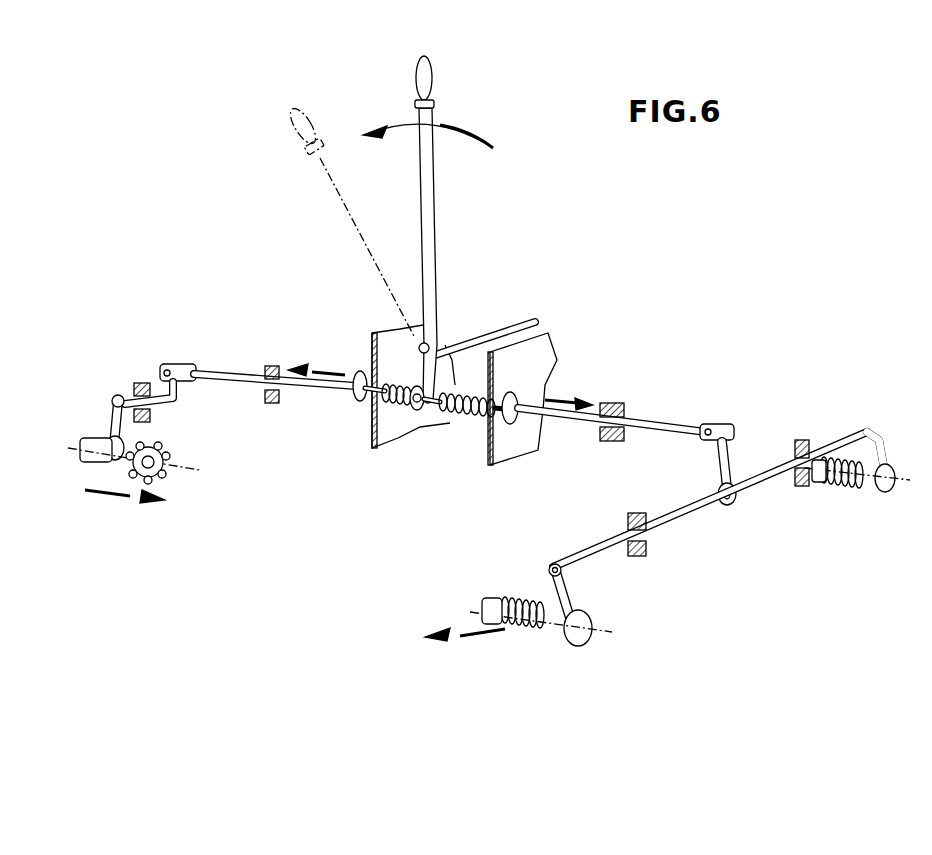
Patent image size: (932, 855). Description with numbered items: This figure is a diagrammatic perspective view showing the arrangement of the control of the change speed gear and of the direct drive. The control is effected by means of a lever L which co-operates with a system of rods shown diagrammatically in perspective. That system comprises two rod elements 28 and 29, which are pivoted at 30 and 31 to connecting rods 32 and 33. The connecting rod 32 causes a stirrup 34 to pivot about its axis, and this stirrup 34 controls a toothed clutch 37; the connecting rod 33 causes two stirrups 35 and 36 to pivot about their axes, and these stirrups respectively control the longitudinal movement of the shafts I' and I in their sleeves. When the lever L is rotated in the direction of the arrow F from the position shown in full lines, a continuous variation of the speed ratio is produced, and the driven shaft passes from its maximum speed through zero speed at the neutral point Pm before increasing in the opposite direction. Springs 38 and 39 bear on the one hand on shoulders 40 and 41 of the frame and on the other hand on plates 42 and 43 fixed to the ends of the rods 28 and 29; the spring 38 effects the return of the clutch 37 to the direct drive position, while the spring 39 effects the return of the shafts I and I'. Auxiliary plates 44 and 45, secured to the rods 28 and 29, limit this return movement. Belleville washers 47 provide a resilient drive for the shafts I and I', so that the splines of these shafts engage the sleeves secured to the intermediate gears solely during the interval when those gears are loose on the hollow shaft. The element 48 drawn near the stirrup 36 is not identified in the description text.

The rod 28 is at (236, 372).
The rod 29 is at (672, 425).
The pivot 30 is at (178, 365).
The pivot 31 is at (727, 428).
The connecting rod 32 is at (165, 382).
The connecting rod 33 is at (715, 470).
The stirrup 34 is at (107, 436).
The stirrup 35 is at (580, 624).
The stirrup 36 is at (880, 490).
The toothed clutch 37 is at (162, 452).
The spring 38 is at (400, 410).
The spring 39 is at (470, 412).
The shoulder of the frame 40 is at (383, 353).
The shoulder of the frame 41 is at (532, 358).
The plate 42 is at (416, 410).
The plate 43 is at (442, 402).
The auxiliary plate 44 is at (352, 403).
The auxiliary plate 45 is at (511, 422).
The Belleville washers 47 is at (518, 598).
The spring 48 is at (852, 480).
The lever L is at (433, 250).
The arrow F is at (438, 124).
The neutral point Pm is at (447, 392).
The shaft I is at (824, 437).
The shaft I' is at (465, 600).